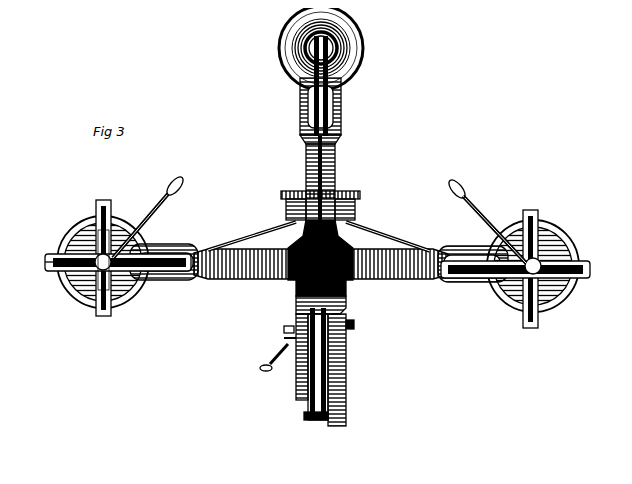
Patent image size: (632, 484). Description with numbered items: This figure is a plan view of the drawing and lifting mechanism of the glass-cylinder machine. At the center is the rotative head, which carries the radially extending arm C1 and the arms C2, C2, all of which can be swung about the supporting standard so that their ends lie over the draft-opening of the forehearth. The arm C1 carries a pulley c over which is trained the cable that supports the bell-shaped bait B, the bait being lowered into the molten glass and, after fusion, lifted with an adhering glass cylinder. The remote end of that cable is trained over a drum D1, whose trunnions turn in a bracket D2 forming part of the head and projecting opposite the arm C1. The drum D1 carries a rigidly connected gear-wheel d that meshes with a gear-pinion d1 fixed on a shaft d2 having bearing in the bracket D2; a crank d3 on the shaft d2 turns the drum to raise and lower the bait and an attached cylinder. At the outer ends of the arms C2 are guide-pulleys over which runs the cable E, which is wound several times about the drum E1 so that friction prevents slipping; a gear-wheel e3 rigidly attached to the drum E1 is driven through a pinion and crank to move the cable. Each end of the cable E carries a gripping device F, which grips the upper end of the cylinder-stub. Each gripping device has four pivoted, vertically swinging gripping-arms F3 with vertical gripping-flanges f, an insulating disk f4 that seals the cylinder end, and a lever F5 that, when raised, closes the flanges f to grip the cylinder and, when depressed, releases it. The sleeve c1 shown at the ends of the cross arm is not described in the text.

The bait B is at (341, 40).
The pulley c is at (330, 93).
The arm C1 is at (331, 178).
The gear-wheel e3 is at (325, 187).
The drum E1 is at (280, 208).
The arm C2 is at (440, 243).
The cable E is at (278, 200).
The sleeves c1 is at (470, 280).
The gripping device F is at (72, 280).
The gripping-flange f is at (120, 284).
The disk f4 is at (512, 290).
The gripping-arm F3 is at (83, 212).
The lever F5 is at (480, 190).
The bracket D2 is at (330, 298).
The gear-wheel d is at (330, 408).
The gear-pinion d1 is at (346, 317).
The shaft d2 is at (290, 318).
The crank d3 is at (268, 344).
The drum D1 is at (305, 413).